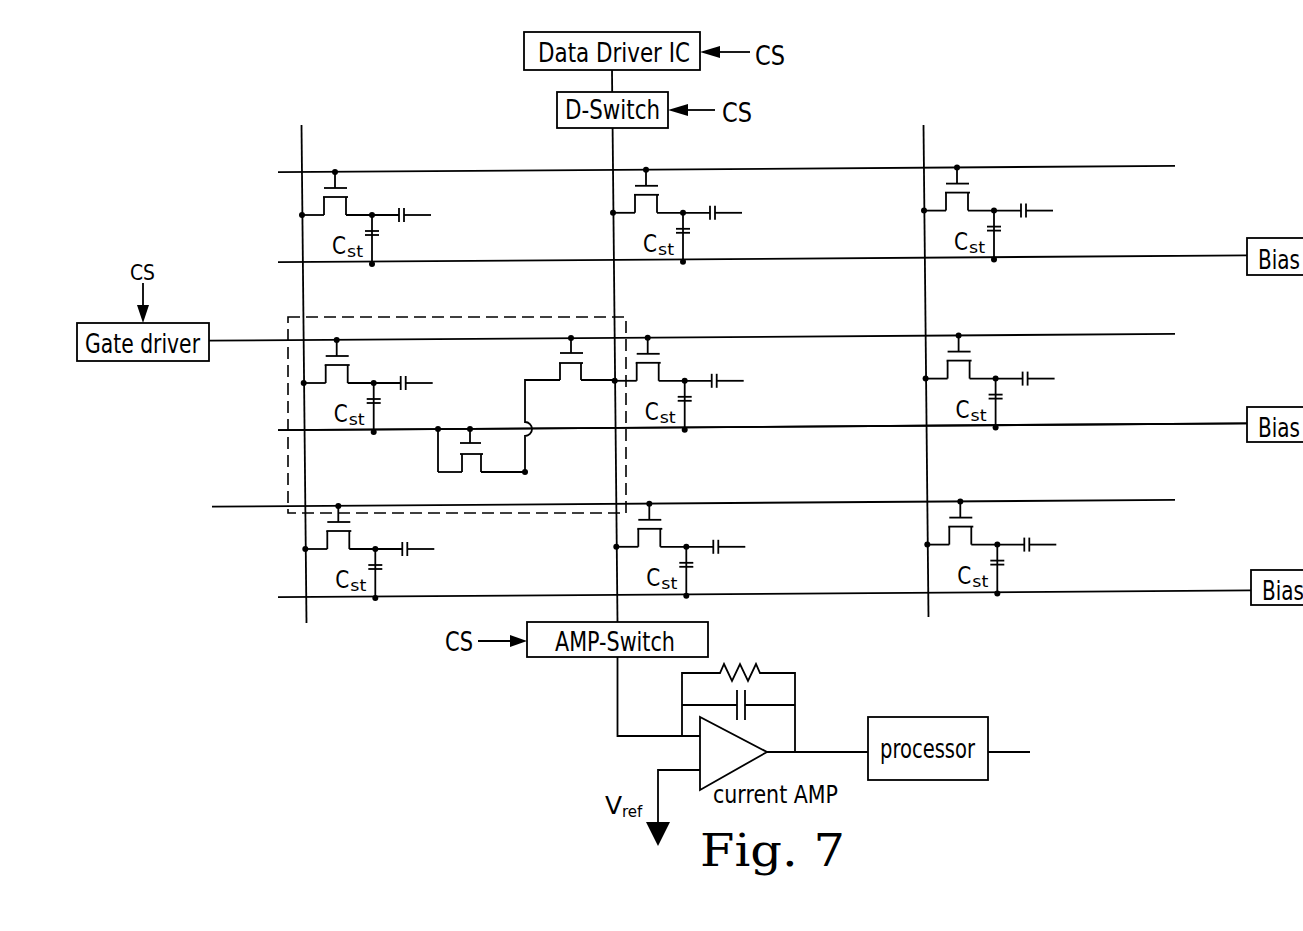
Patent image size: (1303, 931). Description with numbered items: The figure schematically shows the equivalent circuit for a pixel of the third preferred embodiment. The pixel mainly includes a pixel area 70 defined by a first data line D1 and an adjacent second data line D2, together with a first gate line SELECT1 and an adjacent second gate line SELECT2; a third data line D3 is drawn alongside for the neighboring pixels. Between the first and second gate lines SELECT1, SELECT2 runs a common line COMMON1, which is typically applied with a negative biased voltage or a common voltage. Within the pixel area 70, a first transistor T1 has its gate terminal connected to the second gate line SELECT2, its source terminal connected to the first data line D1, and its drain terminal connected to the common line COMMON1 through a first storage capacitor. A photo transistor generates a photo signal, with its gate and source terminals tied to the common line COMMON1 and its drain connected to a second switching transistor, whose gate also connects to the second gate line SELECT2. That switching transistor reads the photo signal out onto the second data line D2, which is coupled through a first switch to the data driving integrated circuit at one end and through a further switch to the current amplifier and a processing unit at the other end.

The pixel area 70 is at (416, 415).
The first transistor T1 is at (367, 386).
The first data line D1 is at (308, 360).
The second data line D2 is at (601, 346).
The data line D3 is at (929, 357).
The first gate line SELECT1 is at (693, 519).
The second gate line SELECT2 is at (692, 351).
The common line COMMON1 is at (762, 413).